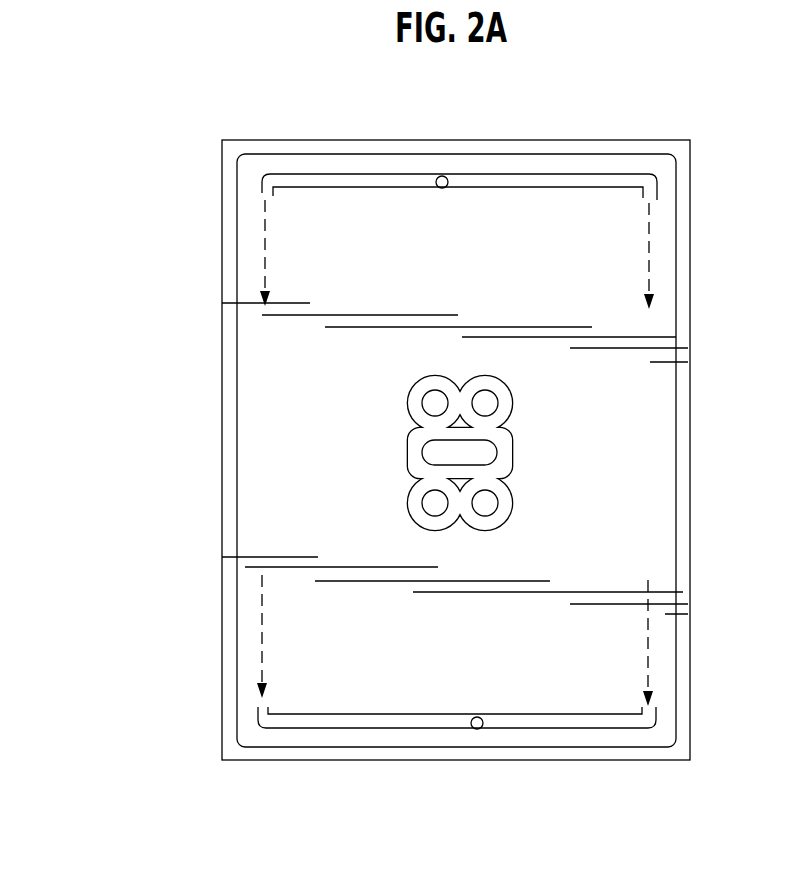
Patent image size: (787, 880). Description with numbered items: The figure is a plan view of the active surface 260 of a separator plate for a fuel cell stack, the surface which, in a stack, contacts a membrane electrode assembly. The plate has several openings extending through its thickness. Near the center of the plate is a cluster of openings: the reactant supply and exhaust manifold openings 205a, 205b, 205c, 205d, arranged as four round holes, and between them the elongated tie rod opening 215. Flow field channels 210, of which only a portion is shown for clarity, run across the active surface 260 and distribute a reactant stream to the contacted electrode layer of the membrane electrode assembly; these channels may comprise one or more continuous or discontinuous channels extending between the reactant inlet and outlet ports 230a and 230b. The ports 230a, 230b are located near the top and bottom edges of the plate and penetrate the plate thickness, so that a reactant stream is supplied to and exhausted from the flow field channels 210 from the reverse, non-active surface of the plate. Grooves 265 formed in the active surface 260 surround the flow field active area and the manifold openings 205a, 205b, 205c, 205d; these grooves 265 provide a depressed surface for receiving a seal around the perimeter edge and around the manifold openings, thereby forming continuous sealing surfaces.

The flow field channels 210 is at (290, 178).
The active surface 260 is at (262, 372).
The grooves 265 is at (437, 505).
The tie rod opening 215 is at (480, 452).
The reactant supply manifold opening 205a is at (437, 401).
The reactant exhaust manifold opening 205b is at (487, 503).
The reactant supply manifold opening 205c is at (487, 402).
The reactant exhaust manifold opening 205d is at (437, 505).
The reactant inlet port 230a is at (445, 177).
The reactant outlet port 230b is at (477, 729).